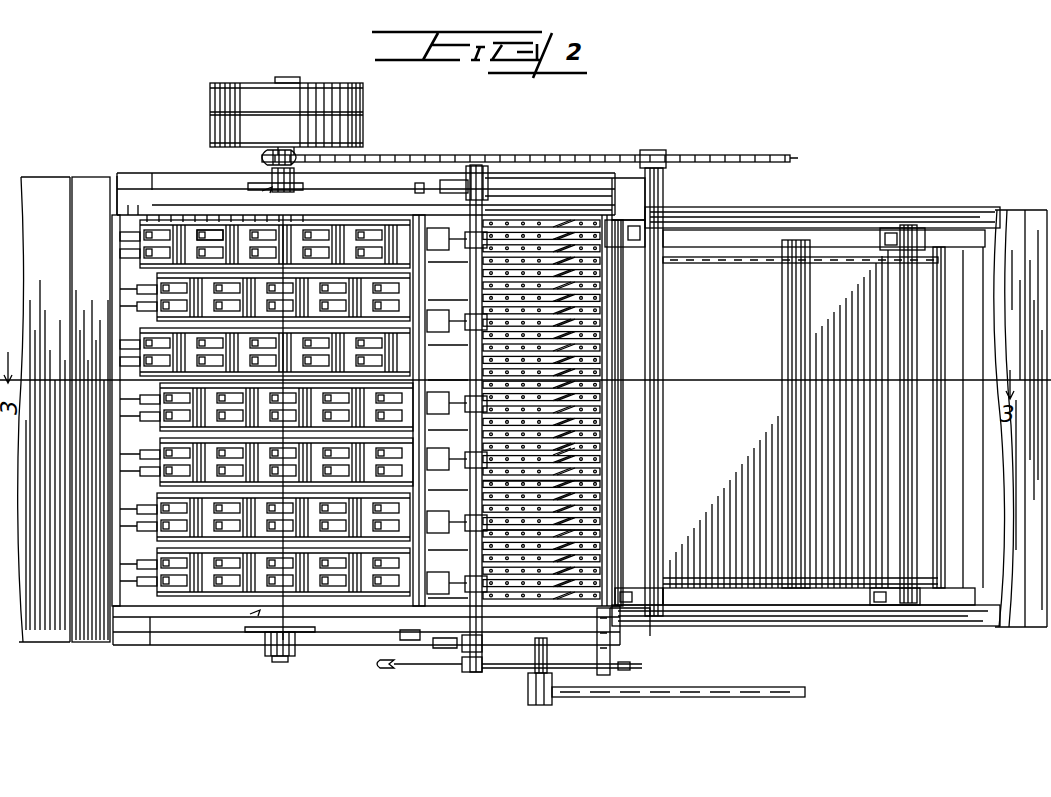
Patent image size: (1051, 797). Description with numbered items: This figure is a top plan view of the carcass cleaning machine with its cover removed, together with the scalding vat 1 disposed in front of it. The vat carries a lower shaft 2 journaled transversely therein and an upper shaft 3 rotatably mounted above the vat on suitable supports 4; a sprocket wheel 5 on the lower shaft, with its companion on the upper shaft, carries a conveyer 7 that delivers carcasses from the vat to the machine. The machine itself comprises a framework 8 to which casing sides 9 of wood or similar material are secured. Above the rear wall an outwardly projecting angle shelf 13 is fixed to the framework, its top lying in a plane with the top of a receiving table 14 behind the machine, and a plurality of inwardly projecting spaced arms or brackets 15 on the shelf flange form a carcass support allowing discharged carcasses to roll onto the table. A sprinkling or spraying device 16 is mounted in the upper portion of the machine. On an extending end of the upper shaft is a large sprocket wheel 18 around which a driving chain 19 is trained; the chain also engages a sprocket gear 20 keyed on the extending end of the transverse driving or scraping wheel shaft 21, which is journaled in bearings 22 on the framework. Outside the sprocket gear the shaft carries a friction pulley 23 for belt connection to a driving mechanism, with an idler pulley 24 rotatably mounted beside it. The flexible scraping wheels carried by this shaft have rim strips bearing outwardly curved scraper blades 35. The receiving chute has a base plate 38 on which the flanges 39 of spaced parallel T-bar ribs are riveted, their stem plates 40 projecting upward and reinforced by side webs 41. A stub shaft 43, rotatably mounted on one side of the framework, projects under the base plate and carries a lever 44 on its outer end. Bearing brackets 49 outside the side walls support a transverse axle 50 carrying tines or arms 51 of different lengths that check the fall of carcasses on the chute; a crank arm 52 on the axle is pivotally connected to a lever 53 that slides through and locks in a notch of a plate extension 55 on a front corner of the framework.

The scalding vat 1 is at (816, 220).
The lower shaft 2 is at (912, 330).
The upper shaft 3 is at (644, 470).
The supports 4 is at (800, 419).
The sprocket wheel 5 is at (258, 401).
The conveyer 7 is at (756, 264).
The framework 8 is at (122, 190).
The casing sides 9 is at (161, 192).
The angle shelf 13 is at (91, 409).
The receiving table 14 is at (44, 409).
The arms or brackets 15 is at (160, 480).
The sprinkling or spraying device 16 is at (420, 183).
The large sprocket wheel 18 is at (682, 160).
The driving chain 19 is at (478, 166).
The sprocket gear 20 is at (267, 159).
The driving or scraping wheel shaft 21 is at (280, 662).
The bearings 22 is at (333, 172).
The friction pulley 23 is at (286, 133).
The idler pulley 24 is at (286, 112).
The scraper blades 35 is at (124, 252).
The base plate 38 is at (572, 453).
The flanges 39 is at (592, 489).
The stems or plates 40 is at (602, 536).
The side webs 41 is at (574, 451).
The stub shaft 43 is at (535, 684).
The lever 44 is at (626, 696).
The bearing bracket 49 is at (487, 192).
The transverse axle or shaft 50 is at (488, 207).
The tines or arms 51 is at (445, 459).
The crank arm 52 is at (440, 666).
The lever 53 is at (630, 668).
The plate extension 55 is at (212, 249).